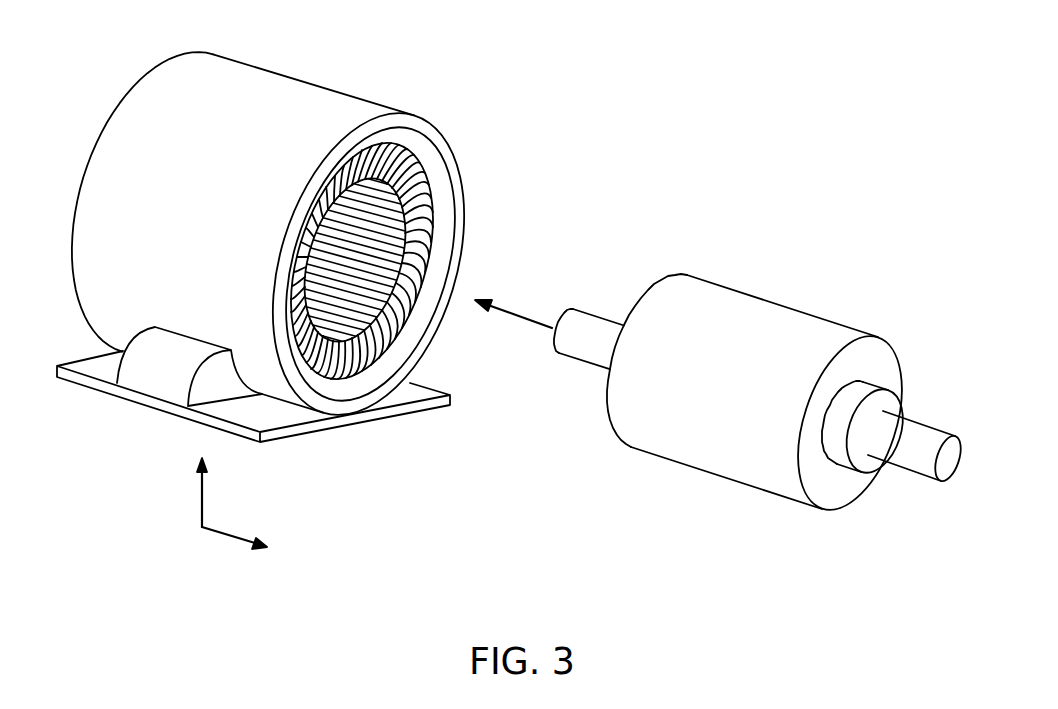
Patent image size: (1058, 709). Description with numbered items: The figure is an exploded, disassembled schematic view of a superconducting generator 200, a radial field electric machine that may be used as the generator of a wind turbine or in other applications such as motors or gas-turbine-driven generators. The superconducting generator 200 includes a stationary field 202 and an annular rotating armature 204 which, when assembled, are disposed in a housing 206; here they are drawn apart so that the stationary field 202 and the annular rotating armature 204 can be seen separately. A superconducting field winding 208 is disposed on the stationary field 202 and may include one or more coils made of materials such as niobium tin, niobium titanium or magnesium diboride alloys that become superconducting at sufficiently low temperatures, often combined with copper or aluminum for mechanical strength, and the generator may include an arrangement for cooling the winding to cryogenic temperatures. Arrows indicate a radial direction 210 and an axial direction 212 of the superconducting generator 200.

The superconducting generator 200 is at (616, 55).
The stationary field 202 is at (440, 225).
The annular rotating armature 204 is at (810, 288).
The housing 206 is at (273, 72).
The superconducting field winding 208 is at (407, 187).
The radial direction 210 is at (202, 498).
The axial direction 212 is at (223, 535).